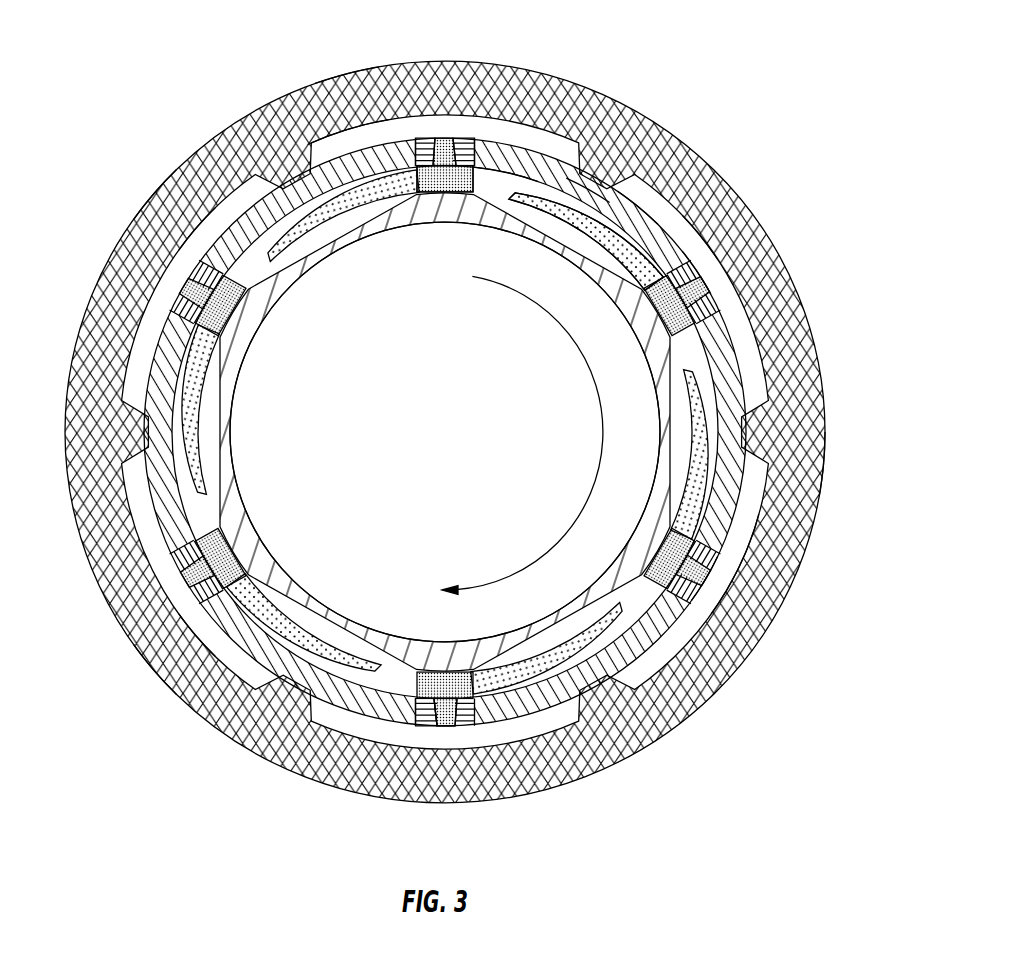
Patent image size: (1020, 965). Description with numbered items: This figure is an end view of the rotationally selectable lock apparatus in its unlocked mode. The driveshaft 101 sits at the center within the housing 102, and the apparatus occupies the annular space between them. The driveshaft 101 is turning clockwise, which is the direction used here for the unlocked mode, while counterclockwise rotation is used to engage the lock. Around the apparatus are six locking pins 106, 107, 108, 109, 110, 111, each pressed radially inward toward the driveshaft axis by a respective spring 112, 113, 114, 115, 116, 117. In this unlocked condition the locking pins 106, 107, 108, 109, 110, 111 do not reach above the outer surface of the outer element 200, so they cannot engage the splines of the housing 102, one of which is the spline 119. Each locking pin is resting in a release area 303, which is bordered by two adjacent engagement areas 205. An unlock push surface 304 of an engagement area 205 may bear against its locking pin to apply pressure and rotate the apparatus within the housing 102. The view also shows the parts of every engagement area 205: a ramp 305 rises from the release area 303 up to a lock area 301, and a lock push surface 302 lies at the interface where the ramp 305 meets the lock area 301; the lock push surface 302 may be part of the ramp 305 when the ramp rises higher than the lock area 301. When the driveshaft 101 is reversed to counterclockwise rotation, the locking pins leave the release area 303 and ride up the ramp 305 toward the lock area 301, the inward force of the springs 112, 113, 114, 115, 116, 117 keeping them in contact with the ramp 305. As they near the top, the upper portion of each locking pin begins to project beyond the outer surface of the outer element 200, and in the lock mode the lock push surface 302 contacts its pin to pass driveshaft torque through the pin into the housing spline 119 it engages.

The outer element 200 is at (318, 84).
The housing 102 is at (347, 87).
The spring 112 is at (428, 140).
The locking pin 106 is at (497, 177).
The release area 303 is at (498, 173).
The ramp 305 is at (542, 187).
The lock push surface 302 is at (590, 187).
The lock area 301 is at (633, 207).
The spring 113 is at (690, 230).
The locking pin 107 is at (708, 262).
The spring 117 is at (157, 203).
The locking pin 111 is at (188, 242).
The engagement area 205 is at (272, 277).
The unlock push surface 304 is at (432, 185).
The spline 119 is at (792, 462).
The driveshaft 101 is at (745, 530).
The locking pin 108 is at (720, 600).
The spring 114 is at (700, 588).
The locking pin 110 is at (178, 640).
The spring 116 is at (172, 688).
The spring 115 is at (427, 723).
The locking pin 109 is at (443, 723).